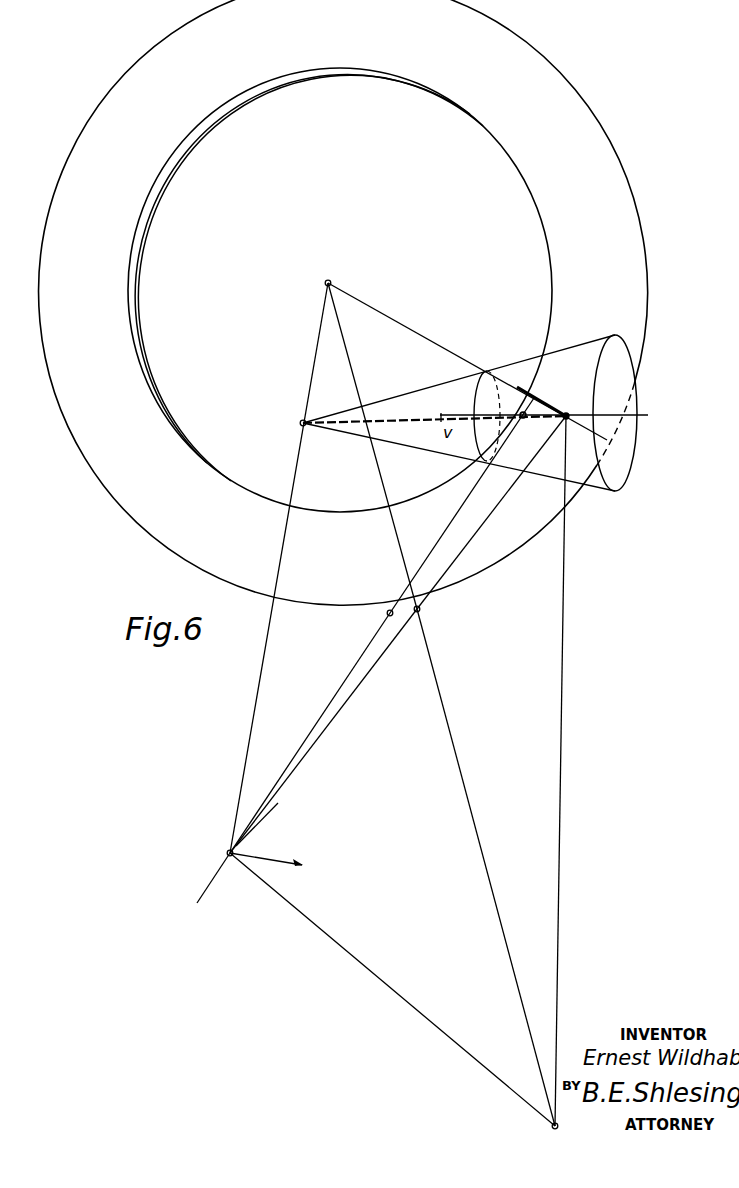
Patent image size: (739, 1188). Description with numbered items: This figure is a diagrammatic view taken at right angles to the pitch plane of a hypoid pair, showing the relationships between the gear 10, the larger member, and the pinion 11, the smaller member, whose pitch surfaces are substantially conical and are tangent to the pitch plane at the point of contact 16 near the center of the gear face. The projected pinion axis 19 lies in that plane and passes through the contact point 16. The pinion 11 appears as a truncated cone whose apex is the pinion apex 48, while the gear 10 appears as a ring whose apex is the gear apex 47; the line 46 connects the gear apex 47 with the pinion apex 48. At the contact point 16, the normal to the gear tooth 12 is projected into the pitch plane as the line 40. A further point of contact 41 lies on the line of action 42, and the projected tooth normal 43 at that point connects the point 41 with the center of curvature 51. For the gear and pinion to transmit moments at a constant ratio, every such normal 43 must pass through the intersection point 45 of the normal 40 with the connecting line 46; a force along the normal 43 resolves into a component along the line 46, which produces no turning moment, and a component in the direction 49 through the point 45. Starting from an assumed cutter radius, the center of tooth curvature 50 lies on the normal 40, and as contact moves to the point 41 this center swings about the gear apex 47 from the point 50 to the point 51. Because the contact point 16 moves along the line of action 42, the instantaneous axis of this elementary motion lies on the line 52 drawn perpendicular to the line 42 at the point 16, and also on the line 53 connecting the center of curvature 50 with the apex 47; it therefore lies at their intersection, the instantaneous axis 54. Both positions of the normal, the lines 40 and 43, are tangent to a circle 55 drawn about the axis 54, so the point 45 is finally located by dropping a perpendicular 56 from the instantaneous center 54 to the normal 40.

The gear 10 is at (636, 239).
The pinion 11 is at (632, 402).
The longitudinally curved teeth 12 is at (530, 391).
The point of contact 16 is at (567, 412).
The projected pinion axis 19 is at (434, 405).
The projection of tooth normal 40 is at (474, 539).
The point of contact 41 is at (521, 412).
The line of action 42 is at (544, 404).
The projection of tooth normal 43 is at (452, 525).
The intersection point 45 is at (234, 851).
The connecting line 46 is at (252, 724).
The gear apex 47 is at (332, 281).
The pinion apex 48 is at (300, 425).
The direction perpendicular to connecting line 49 is at (283, 866).
The center of tooth curvature 50 is at (420, 609).
The center of tooth curvature 51 is at (388, 615).
The perpendicular line 52 is at (562, 700).
The connecting line 53 is at (456, 753).
The instantaneous axis 54 is at (558, 1126).
The circle 55 is at (200, 896).
The perpendicular 56 is at (372, 968).